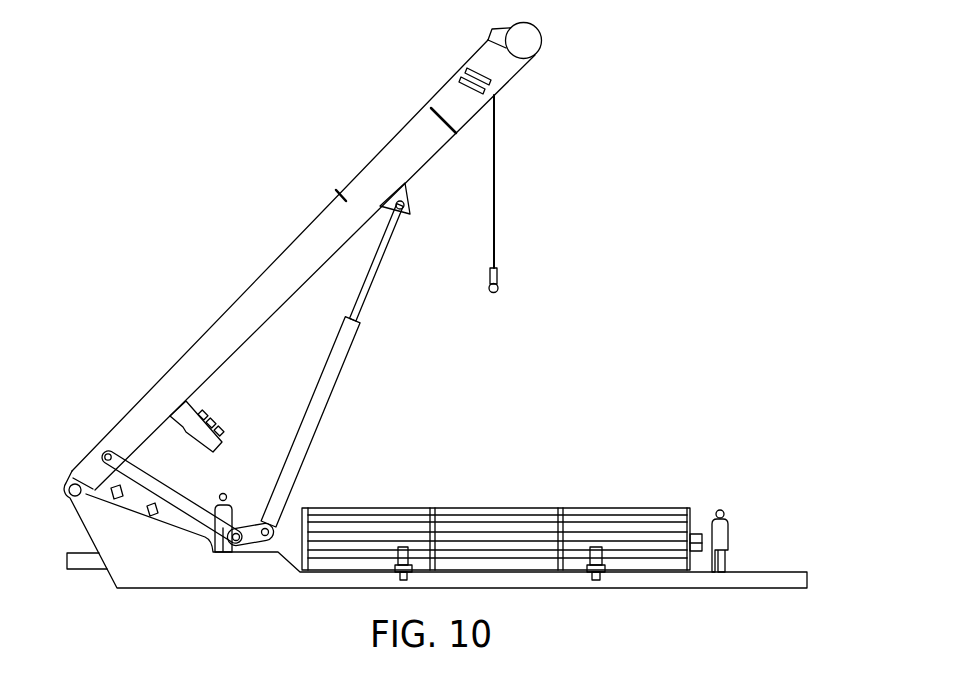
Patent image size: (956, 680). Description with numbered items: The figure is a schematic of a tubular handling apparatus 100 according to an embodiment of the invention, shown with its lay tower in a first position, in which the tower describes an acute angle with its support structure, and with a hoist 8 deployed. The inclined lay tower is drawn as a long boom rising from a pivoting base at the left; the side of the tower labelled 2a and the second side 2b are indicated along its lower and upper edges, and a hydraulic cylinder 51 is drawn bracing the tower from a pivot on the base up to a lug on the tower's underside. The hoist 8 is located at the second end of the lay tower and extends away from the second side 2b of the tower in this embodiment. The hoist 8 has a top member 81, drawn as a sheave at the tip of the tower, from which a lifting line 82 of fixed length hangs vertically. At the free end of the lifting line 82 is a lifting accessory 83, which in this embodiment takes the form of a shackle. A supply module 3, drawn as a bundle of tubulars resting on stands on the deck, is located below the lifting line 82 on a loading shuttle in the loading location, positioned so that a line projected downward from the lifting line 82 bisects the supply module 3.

The tubular handling apparatus 100 is at (667, 118).
The boom first section 2a is at (244, 343).
The second side 2b is at (269, 268).
The supply module 3 is at (643, 432).
The hydraulic cylinder 51 is at (334, 392).
The hoist 8 is at (476, 28).
The top member 81 is at (542, 40).
The lifting line 82 is at (496, 203).
The lifting accessory 83 is at (500, 288).